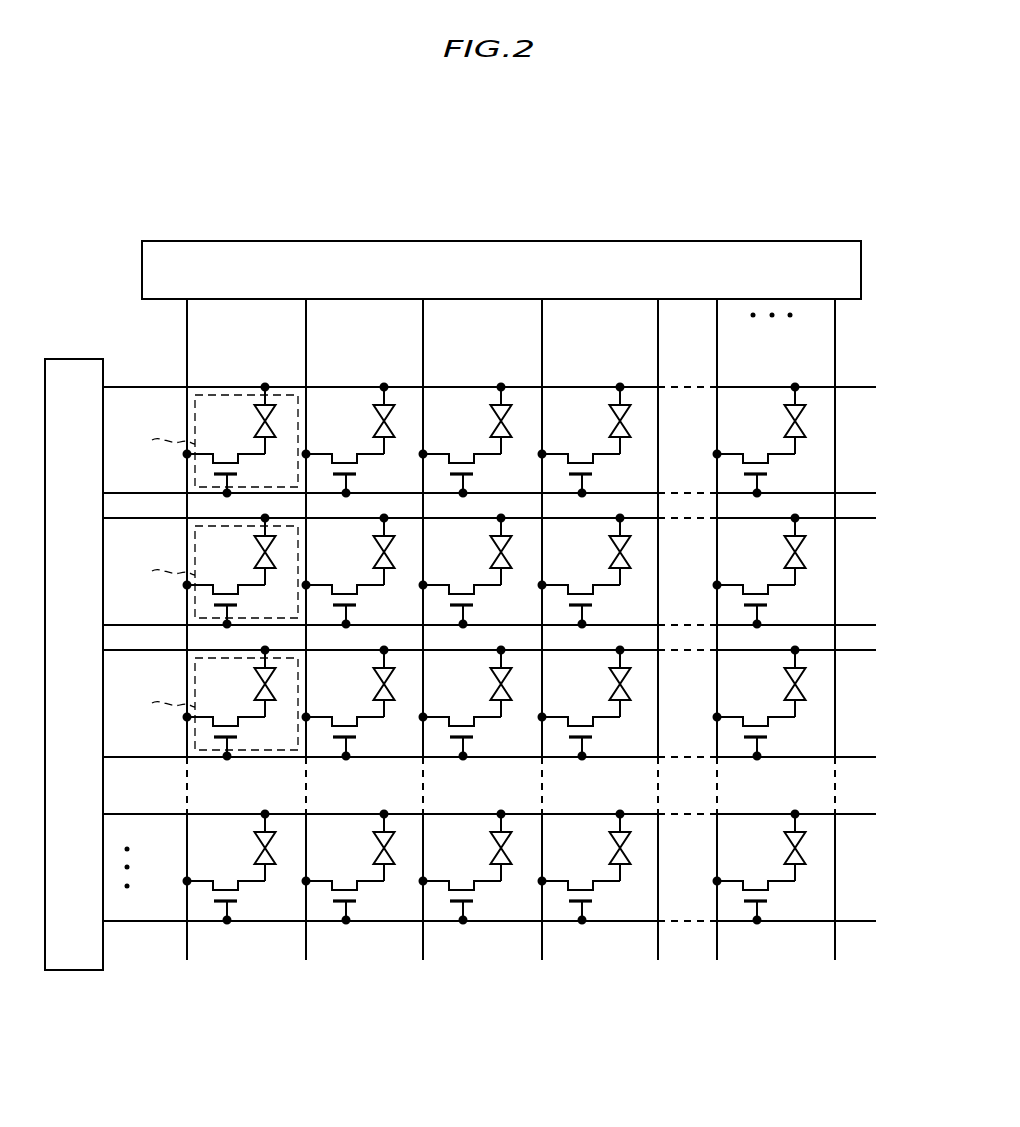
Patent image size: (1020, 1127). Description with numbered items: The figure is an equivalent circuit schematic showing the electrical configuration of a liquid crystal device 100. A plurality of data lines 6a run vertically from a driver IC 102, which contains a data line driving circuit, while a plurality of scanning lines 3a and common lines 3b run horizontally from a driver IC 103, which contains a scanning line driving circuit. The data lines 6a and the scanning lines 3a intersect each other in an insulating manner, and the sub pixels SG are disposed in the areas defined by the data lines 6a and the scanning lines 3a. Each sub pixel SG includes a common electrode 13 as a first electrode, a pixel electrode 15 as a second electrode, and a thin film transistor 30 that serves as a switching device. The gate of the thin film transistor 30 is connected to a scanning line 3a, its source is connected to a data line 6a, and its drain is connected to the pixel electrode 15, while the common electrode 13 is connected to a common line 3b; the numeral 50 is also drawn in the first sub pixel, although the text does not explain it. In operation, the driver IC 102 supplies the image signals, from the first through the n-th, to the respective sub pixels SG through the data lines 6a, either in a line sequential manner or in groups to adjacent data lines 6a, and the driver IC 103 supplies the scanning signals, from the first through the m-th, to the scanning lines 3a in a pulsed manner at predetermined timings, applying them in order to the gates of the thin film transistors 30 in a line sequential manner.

The liquid crystal device 100 is at (780, 206).
The driver IC 102 is at (862, 268).
The driver IC 103 is at (76, 358).
The data line 6a is at (189, 344).
The common line 3b is at (856, 388).
The scanning line 3a is at (856, 492).
The common electrode 13 is at (268, 400).
The light emitting layer 50 is at (268, 418).
The pixel electrode 15 is at (267, 443).
The thin film transistor 30 is at (226, 446).